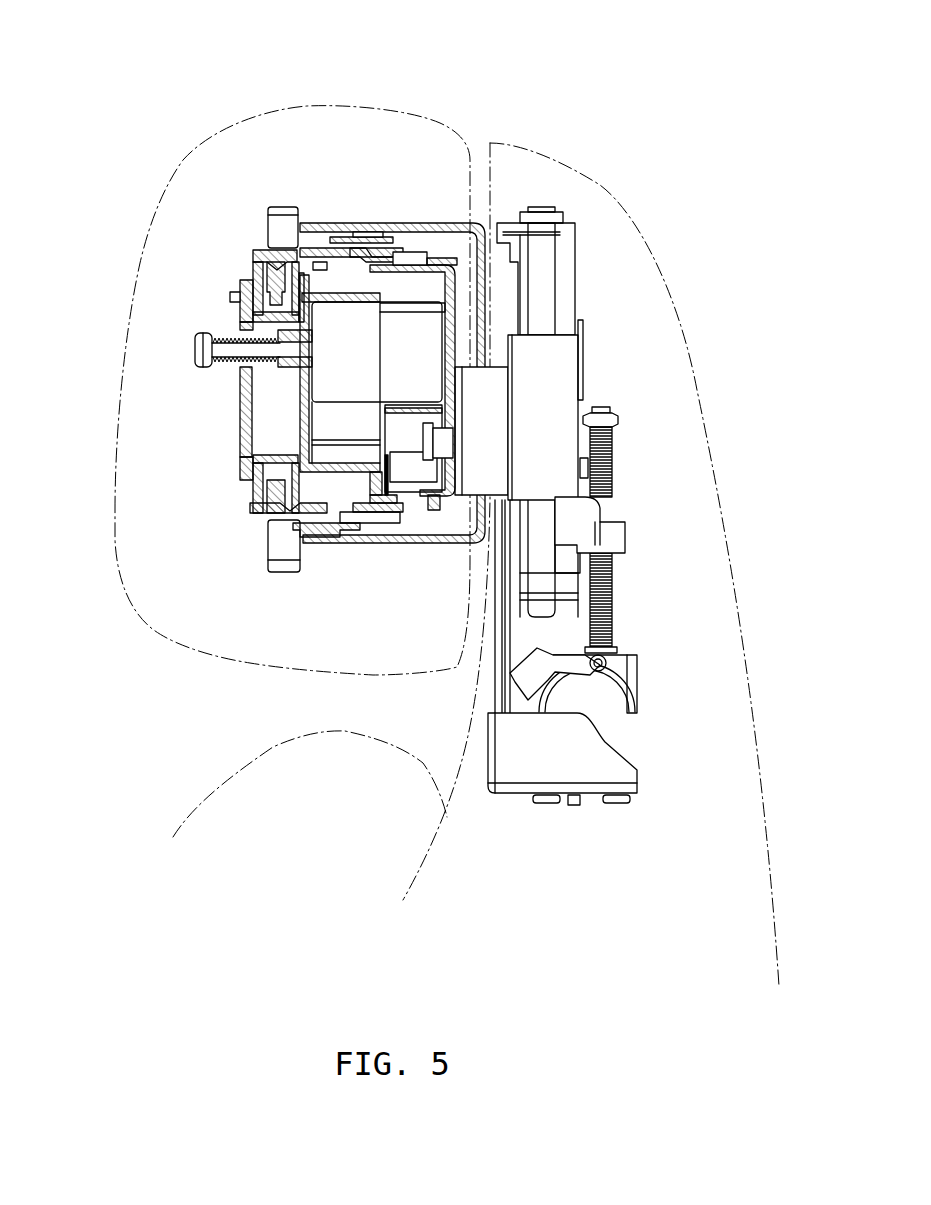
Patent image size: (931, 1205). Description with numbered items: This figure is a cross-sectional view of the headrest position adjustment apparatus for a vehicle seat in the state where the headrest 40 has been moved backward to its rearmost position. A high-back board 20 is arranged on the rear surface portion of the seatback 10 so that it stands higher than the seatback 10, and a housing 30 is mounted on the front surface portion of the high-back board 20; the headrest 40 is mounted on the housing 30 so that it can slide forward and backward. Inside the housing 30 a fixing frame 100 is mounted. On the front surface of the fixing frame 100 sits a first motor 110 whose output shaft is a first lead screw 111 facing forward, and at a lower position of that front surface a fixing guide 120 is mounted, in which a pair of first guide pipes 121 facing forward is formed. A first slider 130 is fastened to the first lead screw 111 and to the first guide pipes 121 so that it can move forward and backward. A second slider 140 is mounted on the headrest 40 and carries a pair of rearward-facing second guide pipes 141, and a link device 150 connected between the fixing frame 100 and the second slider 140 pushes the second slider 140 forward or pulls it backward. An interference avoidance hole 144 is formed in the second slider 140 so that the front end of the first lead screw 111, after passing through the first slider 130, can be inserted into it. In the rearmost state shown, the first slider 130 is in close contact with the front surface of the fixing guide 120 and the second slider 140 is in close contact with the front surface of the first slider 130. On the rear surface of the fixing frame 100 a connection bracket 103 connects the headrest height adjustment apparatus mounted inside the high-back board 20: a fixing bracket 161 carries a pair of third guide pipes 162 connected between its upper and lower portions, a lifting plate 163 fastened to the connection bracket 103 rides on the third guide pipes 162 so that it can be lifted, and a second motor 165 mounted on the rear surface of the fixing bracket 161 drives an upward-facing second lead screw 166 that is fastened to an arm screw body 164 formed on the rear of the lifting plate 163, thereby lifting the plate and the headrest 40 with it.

The seatback 10 is at (220, 787).
The high-back board 20 is at (560, 163).
The housing 30 is at (415, 223).
The headrest 40 is at (183, 160).
The fixing frame 100 is at (452, 245).
The connection bracket 103 is at (483, 387).
The first motor 110 is at (328, 325).
The first lead screw 111 is at (227, 337).
The fixing guide 120 is at (418, 477).
The first guide pipes 121 is at (383, 480).
The first slider 130 is at (332, 268).
The second slider 140 is at (234, 434).
The second guide pipes 141 is at (413, 297).
The interference avoidance hole 144 is at (238, 372).
The link device 150 is at (352, 222).
The fixing bracket 161 is at (567, 252).
The third guide pipes 162 is at (543, 287).
The lifting plate 163 is at (560, 352).
The arm screw body 164 is at (617, 536).
The second motor 165 is at (601, 686).
The second lead screw 166 is at (614, 460).